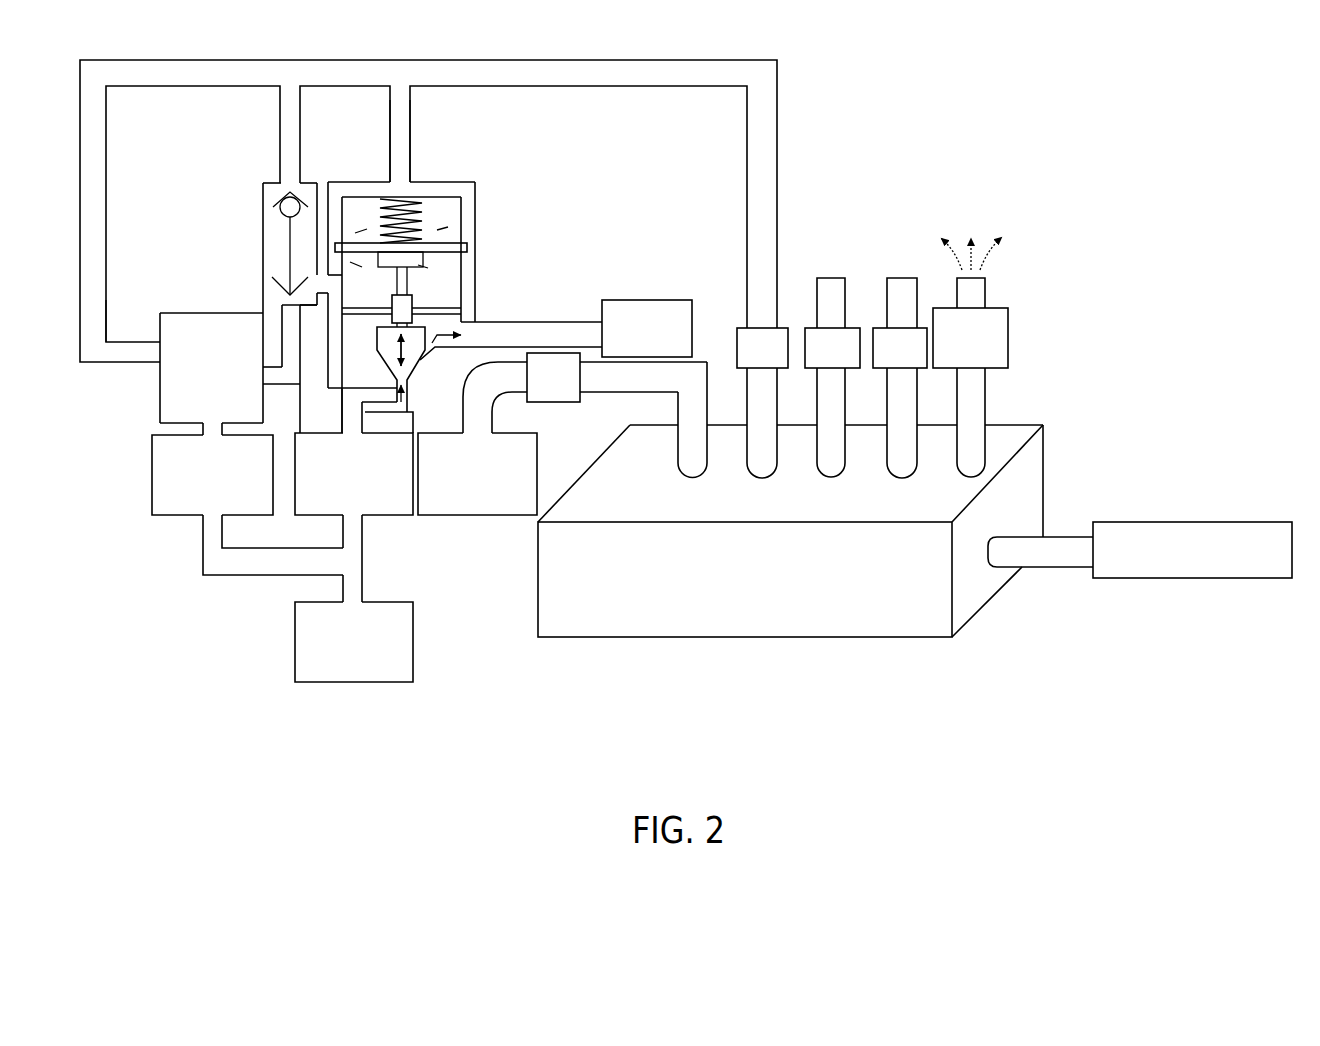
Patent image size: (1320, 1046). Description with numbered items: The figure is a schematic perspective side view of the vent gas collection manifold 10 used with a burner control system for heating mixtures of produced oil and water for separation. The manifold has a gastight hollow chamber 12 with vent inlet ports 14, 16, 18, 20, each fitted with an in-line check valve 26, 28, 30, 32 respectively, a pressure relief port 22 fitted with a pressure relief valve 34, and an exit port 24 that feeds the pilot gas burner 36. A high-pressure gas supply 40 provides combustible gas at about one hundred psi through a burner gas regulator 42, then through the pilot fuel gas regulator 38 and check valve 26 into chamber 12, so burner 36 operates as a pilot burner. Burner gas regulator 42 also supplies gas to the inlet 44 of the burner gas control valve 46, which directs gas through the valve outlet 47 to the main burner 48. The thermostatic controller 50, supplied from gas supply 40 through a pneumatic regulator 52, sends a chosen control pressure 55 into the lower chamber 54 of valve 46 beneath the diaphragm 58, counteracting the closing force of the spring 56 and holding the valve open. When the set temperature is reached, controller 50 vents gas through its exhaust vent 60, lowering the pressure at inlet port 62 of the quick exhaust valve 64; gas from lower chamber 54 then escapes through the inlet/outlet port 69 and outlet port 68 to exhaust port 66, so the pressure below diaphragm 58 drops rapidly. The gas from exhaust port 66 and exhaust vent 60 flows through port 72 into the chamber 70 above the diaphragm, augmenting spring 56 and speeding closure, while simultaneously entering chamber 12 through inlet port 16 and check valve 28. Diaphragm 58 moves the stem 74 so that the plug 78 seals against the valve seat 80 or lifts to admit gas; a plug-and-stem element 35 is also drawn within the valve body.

The vent gas collection manifold 10 is at (882, 394).
The gastight hollow chamber 12 is at (902, 640).
The vent inlet port 14 is at (677, 433).
The vent inlet port 16 is at (746, 433).
The vent inlet port 18 is at (816, 433).
The vent inlet port 20 is at (886, 433).
The pressure relief port 22 is at (956, 433).
The exit port 24 is at (1062, 570).
The check valve 26 is at (558, 407).
The check valve 28 is at (785, 324).
The check valve 30 is at (854, 324).
The check valve 32 is at (921, 324).
The pressure relief valve 34 is at (1012, 330).
The valve plug 35 is at (391, 299).
The pilot gas burner 36 is at (1186, 518).
The pilot fuel gas regulator 38 is at (481, 518).
The high-pressure gas supply 40 is at (345, 685).
The burner gas regulator 42 is at (381, 518).
The inlet 44 is at (400, 417).
The burner gas control valve 46 is at (490, 194).
The valve outlet 47 is at (508, 320).
The main burner 48 is at (667, 297).
The thermostatic controller 50 is at (157, 382).
The pneumatic regulator 52 is at (150, 497).
The lower chamber 54 is at (447, 296).
The control pressure 55 is at (273, 375).
The spring 56 is at (424, 202).
The diaphragm 58 is at (438, 253).
The exhaust vent 60 is at (150, 337).
The inlet port 62 is at (273, 388).
The quick exhaust valve 64 is at (261, 213).
The exhaust port 66 is at (304, 156).
The outlet port 68 is at (321, 301).
The inlet/outlet port 69 is at (334, 287).
The chamber 70 is at (453, 226).
The port 72 is at (413, 178).
The stem 74 is at (410, 277).
The plug 78 is at (422, 364).
The valve seat 80 is at (375, 372).